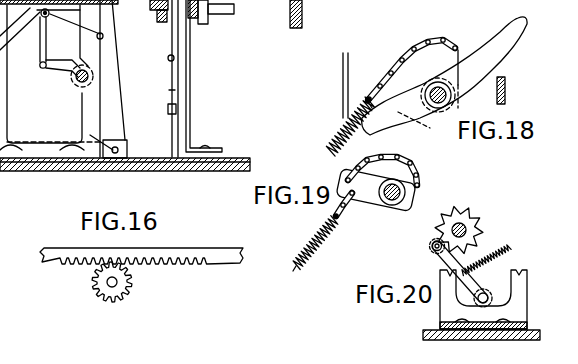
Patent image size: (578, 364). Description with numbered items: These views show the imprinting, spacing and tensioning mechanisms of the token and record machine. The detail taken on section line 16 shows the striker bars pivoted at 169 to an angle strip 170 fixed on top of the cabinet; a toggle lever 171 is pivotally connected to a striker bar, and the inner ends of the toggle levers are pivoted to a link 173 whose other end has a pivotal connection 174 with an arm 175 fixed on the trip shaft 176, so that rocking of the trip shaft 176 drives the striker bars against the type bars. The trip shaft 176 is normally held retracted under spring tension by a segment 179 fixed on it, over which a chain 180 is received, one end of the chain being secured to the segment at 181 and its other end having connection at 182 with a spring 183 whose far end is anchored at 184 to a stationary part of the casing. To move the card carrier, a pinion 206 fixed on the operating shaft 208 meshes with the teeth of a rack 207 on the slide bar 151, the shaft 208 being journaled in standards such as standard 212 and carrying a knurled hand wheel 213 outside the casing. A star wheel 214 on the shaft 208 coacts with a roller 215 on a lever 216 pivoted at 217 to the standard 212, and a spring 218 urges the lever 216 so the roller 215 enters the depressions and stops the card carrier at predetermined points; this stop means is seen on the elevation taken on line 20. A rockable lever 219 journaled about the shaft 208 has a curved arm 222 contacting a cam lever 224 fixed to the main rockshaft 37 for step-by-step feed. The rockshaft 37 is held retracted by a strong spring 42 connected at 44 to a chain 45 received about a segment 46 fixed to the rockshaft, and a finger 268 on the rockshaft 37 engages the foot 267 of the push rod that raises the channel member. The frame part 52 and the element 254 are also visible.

In FIG. 16, the section line 16 is at (55, 18).
In FIG. 16, the section line 20 is at (177, 120).
In FIG. 18, the rockshaft 37 is at (425, 92).
In FIG. 18, the spring 42 is at (340, 127).
In FIG. 18, the connection 44 is at (368, 97).
In FIG. 18, the chain 45 is at (413, 47).
In FIG. 18, the segment 46 is at (454, 45).
In FIG. 16, the frame bracket 52 is at (50, 33).
In FIG. 16, the slide bar 151 is at (168, 247).
In FIG. 16, the pivot 169 is at (72, 132).
In FIG. 16, the angle strip 170 is at (120, 153).
In FIG. 16, the toggle lever 171 is at (104, 37).
In FIG. 16, the link 173 is at (40, 52).
In FIG. 16, the pivotal connection 174 is at (47, 66).
In FIG. 16, the arm 175 is at (50, 95).
In FIG. 19, the arm 175 is at (350, 195).
In FIG. 16, the trip shaft 176 is at (80, 93).
In FIG. 19, the trip shaft 176 is at (345, 180).
In FIG. 19, the segment 179 is at (422, 185).
In FIG. 19, the chain 180 is at (420, 162).
In FIG. 19, the chain securing point 181 is at (421, 172).
In FIG. 19, the connection 182 is at (337, 218).
In FIG. 19, the spring 183 is at (327, 250).
In FIG. 19, the spring anchorage 184 is at (297, 267).
In FIG. 16, the pinion 206 is at (134, 283).
In FIG. 16, the rack 207 is at (182, 263).
In FIG. 16, the operating shaft 208 is at (92, 284).
In FIG. 20, the operating shaft 208 is at (468, 230).
In FIG. 16, the standard 212 is at (191, 105).
In FIG. 20, the standard 212 is at (528, 305).
In FIG. 20, the knurled hand wheel 213 is at (509, 256).
In FIG. 20, the star wheel 214 is at (482, 216).
In FIG. 16, the roller 215 is at (150, 12).
In FIG. 20, the roller 215 is at (432, 247).
In FIG. 16, the lever 216 is at (168, 93).
In FIG. 20, the lever 216 is at (440, 262).
In FIG. 16, the pivot 217 is at (168, 110).
In FIG. 20, the pivot 217 is at (485, 293).
In FIG. 16, the spring 218 is at (168, 59).
In FIG. 16, the rockable lever 219 is at (193, 26).
In FIG. 18, the curved arm 222 is at (508, 90).
In FIG. 18, the cam lever 224 is at (522, 54).
In FIG. 16, the bar 254 is at (231, 14).
In FIG. 18, the foot 267 is at (356, 128).
In FIG. 18, the finger 268 is at (410, 125).